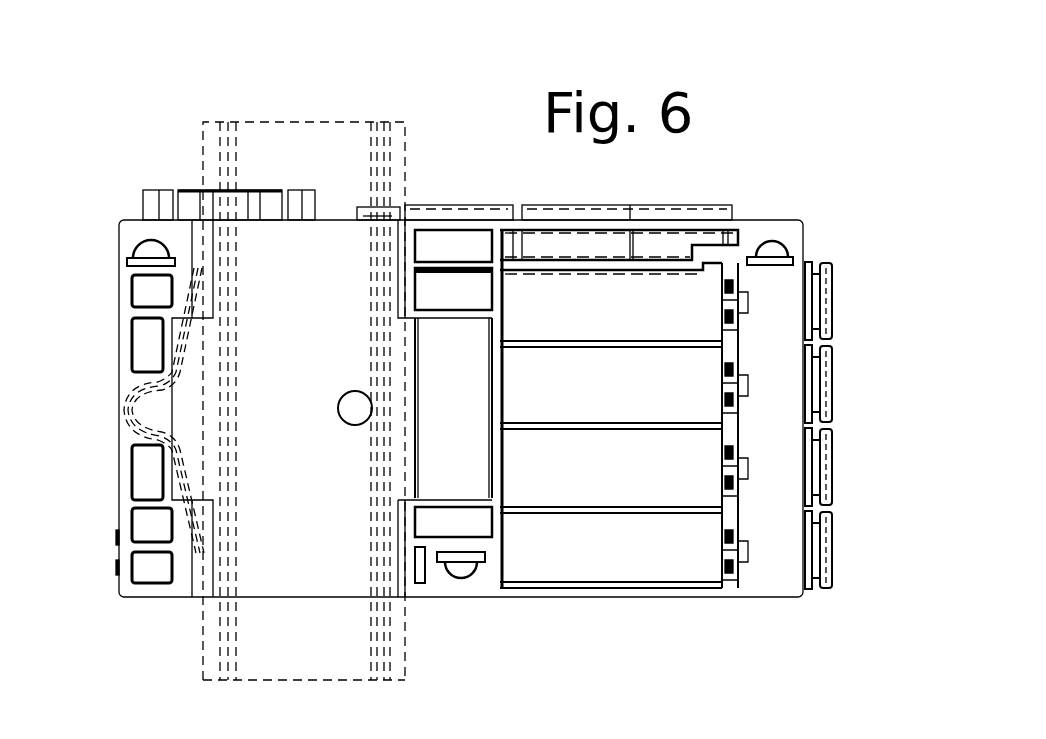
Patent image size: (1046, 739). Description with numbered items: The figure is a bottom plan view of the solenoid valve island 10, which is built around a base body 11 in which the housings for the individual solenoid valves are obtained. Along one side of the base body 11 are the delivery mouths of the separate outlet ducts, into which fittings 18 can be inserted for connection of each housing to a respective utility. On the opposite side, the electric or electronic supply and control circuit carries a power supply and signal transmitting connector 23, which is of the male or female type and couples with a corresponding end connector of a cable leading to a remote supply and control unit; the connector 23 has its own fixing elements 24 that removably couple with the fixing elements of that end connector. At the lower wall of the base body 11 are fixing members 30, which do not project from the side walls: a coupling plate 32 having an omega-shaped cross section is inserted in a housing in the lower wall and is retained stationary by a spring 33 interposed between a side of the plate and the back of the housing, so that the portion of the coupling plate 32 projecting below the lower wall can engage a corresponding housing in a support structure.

The solenoid valve island 10 is at (461, 393).
The base body 11 is at (263, 597).
The fittings 18 is at (833, 490).
The power supply and signal transmitting connector 23 is at (260, 190).
The fixing elements 24 is at (317, 192).
The fixing members 30 is at (416, 126).
The coupling plate 32 is at (308, 671).
The spring 33 is at (120, 432).